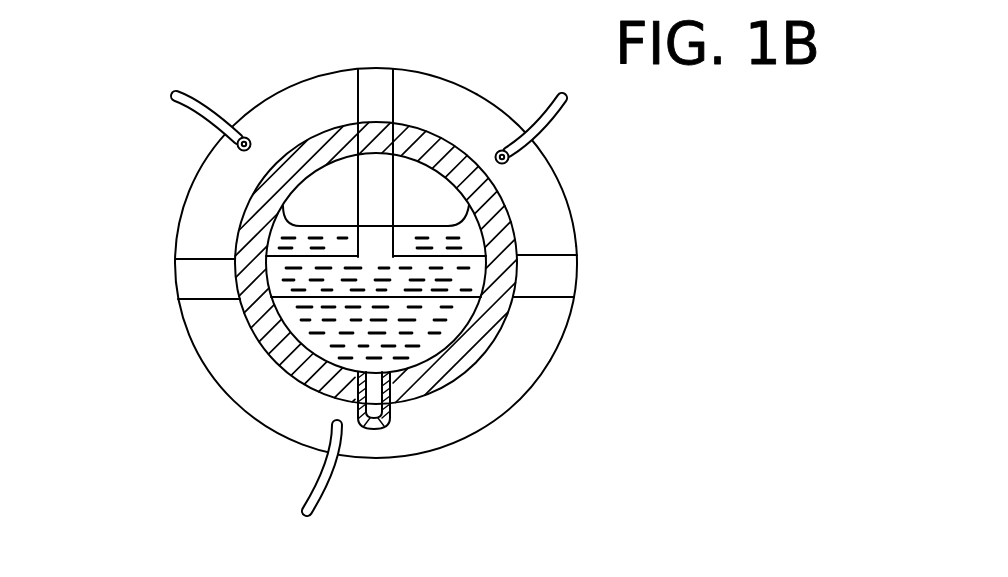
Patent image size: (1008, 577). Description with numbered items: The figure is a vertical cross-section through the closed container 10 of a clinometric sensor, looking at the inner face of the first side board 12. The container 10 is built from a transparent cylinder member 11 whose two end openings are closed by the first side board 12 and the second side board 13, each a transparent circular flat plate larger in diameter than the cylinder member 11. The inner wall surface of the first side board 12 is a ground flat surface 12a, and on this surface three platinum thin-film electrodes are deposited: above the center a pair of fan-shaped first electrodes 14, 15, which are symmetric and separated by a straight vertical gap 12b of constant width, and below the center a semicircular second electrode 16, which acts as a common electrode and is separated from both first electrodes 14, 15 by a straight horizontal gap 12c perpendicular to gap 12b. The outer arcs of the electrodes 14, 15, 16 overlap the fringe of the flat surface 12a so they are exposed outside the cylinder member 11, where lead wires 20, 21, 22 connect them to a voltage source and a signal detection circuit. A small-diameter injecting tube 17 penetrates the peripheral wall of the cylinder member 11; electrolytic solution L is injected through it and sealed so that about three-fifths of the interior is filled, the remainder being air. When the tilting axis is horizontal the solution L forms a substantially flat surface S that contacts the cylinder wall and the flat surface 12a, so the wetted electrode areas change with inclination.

The closed container 10 is at (166, 346).
The cylinder member 11 is at (460, 357).
The first side board 12 is at (576, 272).
The flat surface 12a is at (195, 283).
The straight gap 12b is at (375, 85).
The straight gap 12c is at (538, 282).
The second side board 13 is at (437, 0).
The first electrode 14 is at (210, 190).
The first electrode 15 is at (552, 194).
The second electrode 16 is at (250, 373).
The injecting tube 17 is at (391, 407).
The lead wire 20 is at (190, 101).
The lead wire 21 is at (565, 112).
The lead wire 22 is at (331, 486).
The electrolytic solution L is at (337, 340).
The flat surface S is at (412, 222).